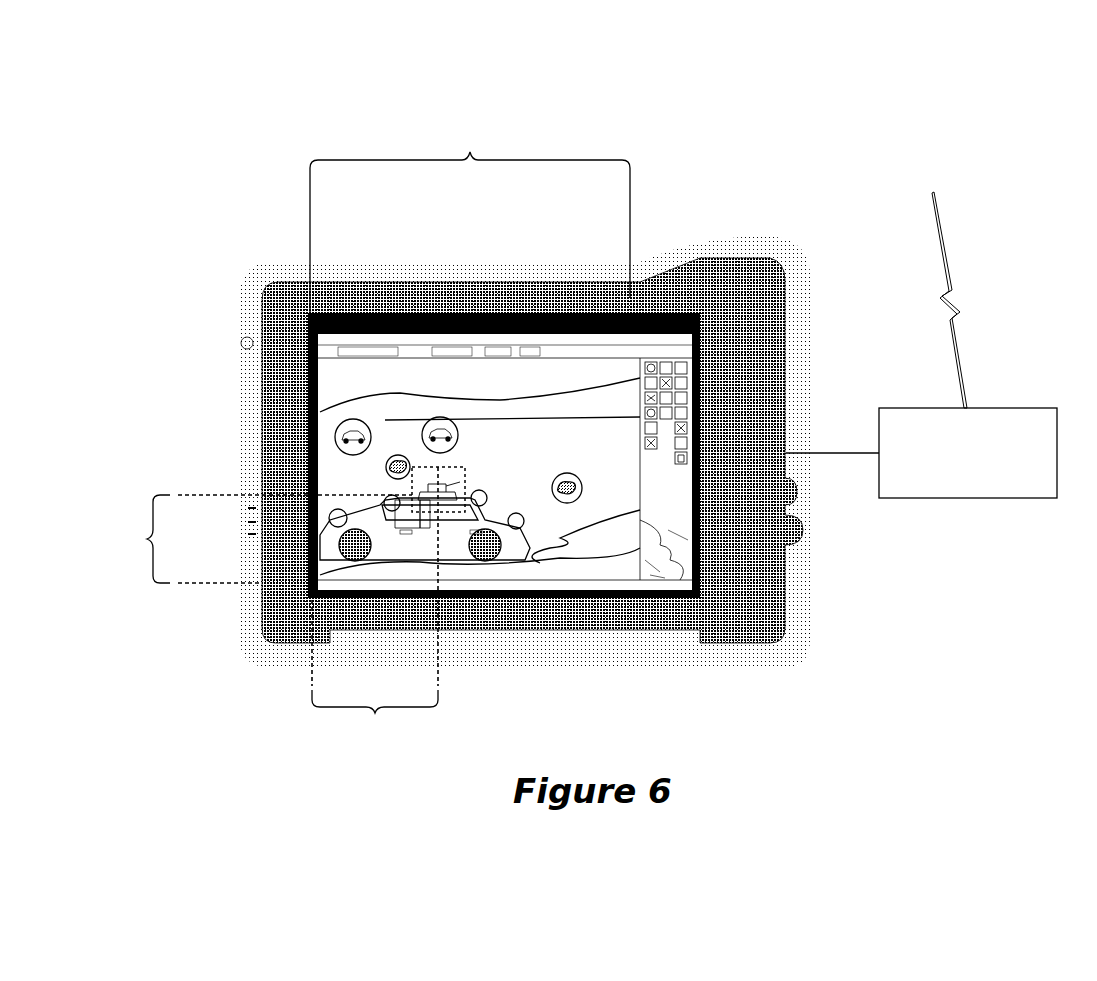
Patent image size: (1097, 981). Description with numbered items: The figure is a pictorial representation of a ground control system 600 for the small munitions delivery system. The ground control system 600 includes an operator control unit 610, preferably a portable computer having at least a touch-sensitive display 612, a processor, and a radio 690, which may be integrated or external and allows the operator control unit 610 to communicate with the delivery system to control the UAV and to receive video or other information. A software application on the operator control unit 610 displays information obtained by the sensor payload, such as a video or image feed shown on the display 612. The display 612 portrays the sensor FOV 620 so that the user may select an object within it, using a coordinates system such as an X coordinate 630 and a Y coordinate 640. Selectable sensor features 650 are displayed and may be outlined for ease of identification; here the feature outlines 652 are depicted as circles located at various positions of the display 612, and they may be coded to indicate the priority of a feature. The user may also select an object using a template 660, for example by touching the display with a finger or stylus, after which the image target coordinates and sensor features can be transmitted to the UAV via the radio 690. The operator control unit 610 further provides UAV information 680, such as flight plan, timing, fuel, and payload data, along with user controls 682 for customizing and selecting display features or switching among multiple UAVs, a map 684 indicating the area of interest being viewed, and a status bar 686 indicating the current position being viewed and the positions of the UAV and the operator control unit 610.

The ground control system 600 is at (1004, 88).
The operator control unit 610 is at (745, 262).
The display 612 is at (617, 597).
The sensor FOV 620 is at (470, 204).
The X coordinate 630 is at (375, 619).
The Y coordinate 640 is at (247, 537).
The selectable sensor features 650 is at (335, 425).
The feature outlines 652 is at (565, 474).
The template 660 is at (455, 514).
The UAV information 680 is at (560, 345).
The user controls 682 is at (700, 378).
The map 684 is at (697, 597).
The status bar 686 is at (550, 600).
The radio 690 is at (949, 477).